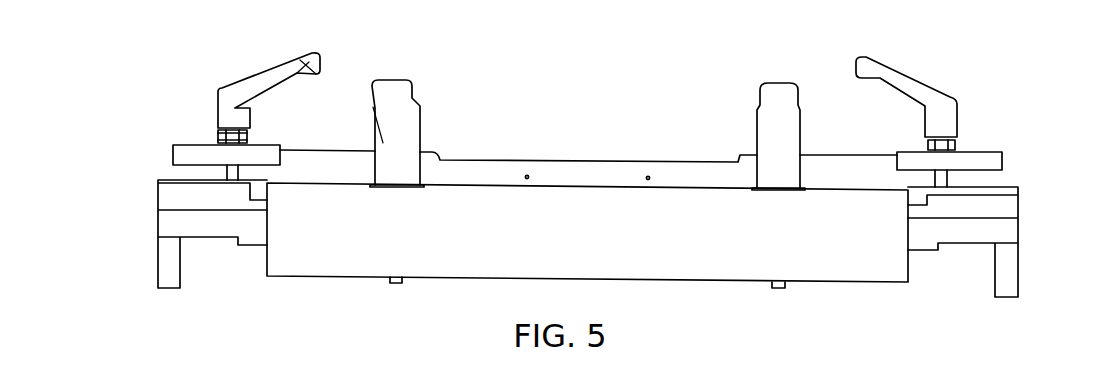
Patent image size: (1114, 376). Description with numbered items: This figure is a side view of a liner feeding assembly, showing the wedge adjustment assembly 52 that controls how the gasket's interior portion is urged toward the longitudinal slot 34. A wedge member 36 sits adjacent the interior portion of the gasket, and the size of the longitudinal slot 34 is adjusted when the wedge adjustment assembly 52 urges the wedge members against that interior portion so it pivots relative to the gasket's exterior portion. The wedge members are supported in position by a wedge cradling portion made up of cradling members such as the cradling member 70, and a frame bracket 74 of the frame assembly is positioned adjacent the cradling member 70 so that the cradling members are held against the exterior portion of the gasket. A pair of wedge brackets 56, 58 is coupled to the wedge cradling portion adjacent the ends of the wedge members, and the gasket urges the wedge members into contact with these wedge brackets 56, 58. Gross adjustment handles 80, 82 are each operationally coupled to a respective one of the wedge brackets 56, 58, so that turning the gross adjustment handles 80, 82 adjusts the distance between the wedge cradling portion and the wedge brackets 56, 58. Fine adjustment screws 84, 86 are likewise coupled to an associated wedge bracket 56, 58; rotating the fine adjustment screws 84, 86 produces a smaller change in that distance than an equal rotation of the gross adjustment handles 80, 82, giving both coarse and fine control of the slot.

The longitudinal slot 34 is at (597, 160).
The wedge member 36 is at (833, 165).
The wedge adjustment assembly 52 is at (978, 97).
The wedge bracket 56 is at (173, 157).
The wedge bracket 58 is at (993, 162).
The cradling member 70 is at (1010, 203).
The frame bracket 74 is at (342, 270).
The gross adjustment handle 80 is at (243, 89).
The gross adjustment handle 82 is at (970, 132).
The fine adjustment screw 84 is at (217, 135).
The fine adjustment screw 86 is at (928, 145).